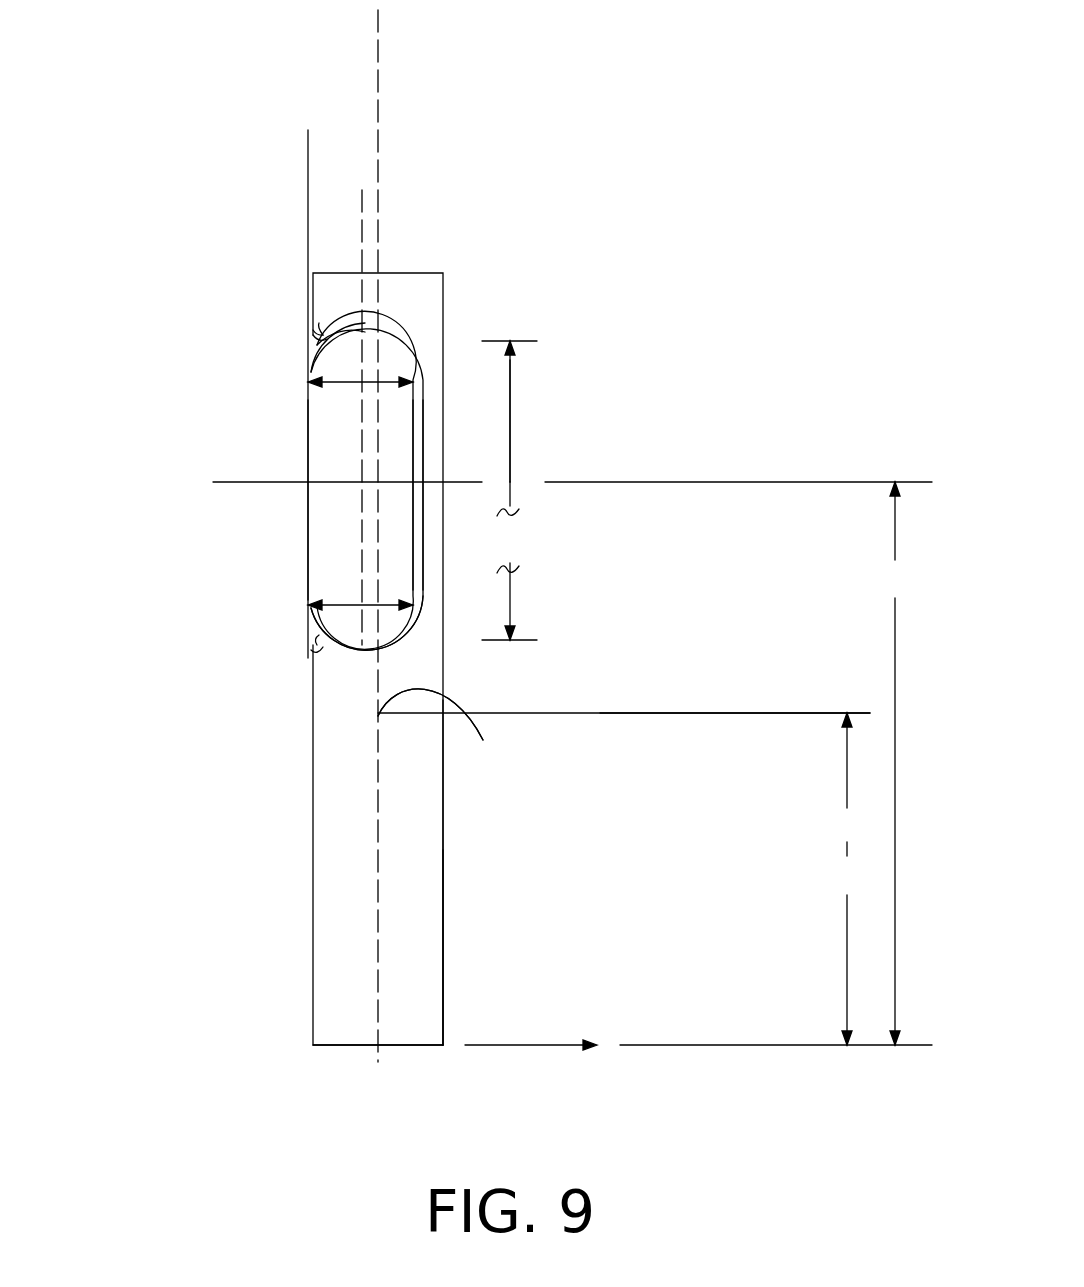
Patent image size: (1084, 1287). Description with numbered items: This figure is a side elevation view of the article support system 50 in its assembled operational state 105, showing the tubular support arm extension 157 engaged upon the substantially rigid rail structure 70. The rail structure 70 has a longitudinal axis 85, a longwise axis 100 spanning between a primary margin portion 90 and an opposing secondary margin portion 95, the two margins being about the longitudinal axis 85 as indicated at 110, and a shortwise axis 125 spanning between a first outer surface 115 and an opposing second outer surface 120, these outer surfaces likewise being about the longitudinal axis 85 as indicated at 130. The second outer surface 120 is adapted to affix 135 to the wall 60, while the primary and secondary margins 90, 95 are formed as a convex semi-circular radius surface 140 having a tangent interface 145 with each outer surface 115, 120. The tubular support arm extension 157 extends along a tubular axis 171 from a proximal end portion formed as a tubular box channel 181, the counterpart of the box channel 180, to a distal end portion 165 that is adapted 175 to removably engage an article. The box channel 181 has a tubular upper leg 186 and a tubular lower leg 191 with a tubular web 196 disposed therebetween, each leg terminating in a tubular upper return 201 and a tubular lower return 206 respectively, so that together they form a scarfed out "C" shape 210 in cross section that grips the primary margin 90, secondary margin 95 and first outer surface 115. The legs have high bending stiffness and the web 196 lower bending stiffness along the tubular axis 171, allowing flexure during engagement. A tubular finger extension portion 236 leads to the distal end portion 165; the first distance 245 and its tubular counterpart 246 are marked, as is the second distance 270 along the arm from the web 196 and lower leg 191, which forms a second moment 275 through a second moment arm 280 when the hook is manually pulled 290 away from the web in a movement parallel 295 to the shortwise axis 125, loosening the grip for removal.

The article support system 50 is at (700, 85).
The assembled operational state 105 is at (705, 162).
The "C" shape cross section 210 is at (170, 190).
The wall 60 is at (300, 145).
The longwise axis 100 is at (362, 225).
The tubular upper leg 186 is at (385, 322).
The convex semi-circular radius surface 140 is at (313, 330).
The primary margin portion 90 is at (277, 273).
The tubular upper return 201 is at (313, 336).
The affixing of second outer surface to wall surface 135 is at (307, 358).
The first and second outer surfaces about the longitudinal axis 130 is at (307, 383).
The tangent interface 145 is at (307, 605).
The second outer surface 120 is at (307, 425).
The longitudinal axis 85 is at (307, 446).
The first outer surface 115 is at (410, 560).
The substantially rigid rail structure 70 is at (330, 588).
The tubular lower return 206 is at (310, 652).
The secondary margin portion 95 is at (320, 643).
The tubular box channel 181 is at (443, 360).
The shortwise axis 125 is at (462, 482).
The tubular web 196 is at (443, 572).
The tubular lower leg 191 is at (443, 648).
The primary and secondary margin portions about the longitudinal axis 110 is at (572, 482).
The distal end portion adapted to removably engage the article 175 is at (310, 1010).
The tubular support arm extension 157 is at (443, 808).
The tubular finger extension portion 236 is at (443, 920).
The distal end portion 165 is at (420, 1045).
The box channel 180 is at (443, 676).
The first distance of the tubular support arm extension 246 is at (380, 737).
The second moment 275 is at (375, 722).
The first distance 245 is at (845, 748).
The second distance 270 is at (850, 784).
The second moment arm 280 is at (850, 953).
The movement parallel to the shortwise axis 295 is at (898, 763).
The manual pulling of the open "J" hook 290 is at (525, 1045).
The tubular axis 171 is at (375, 828).